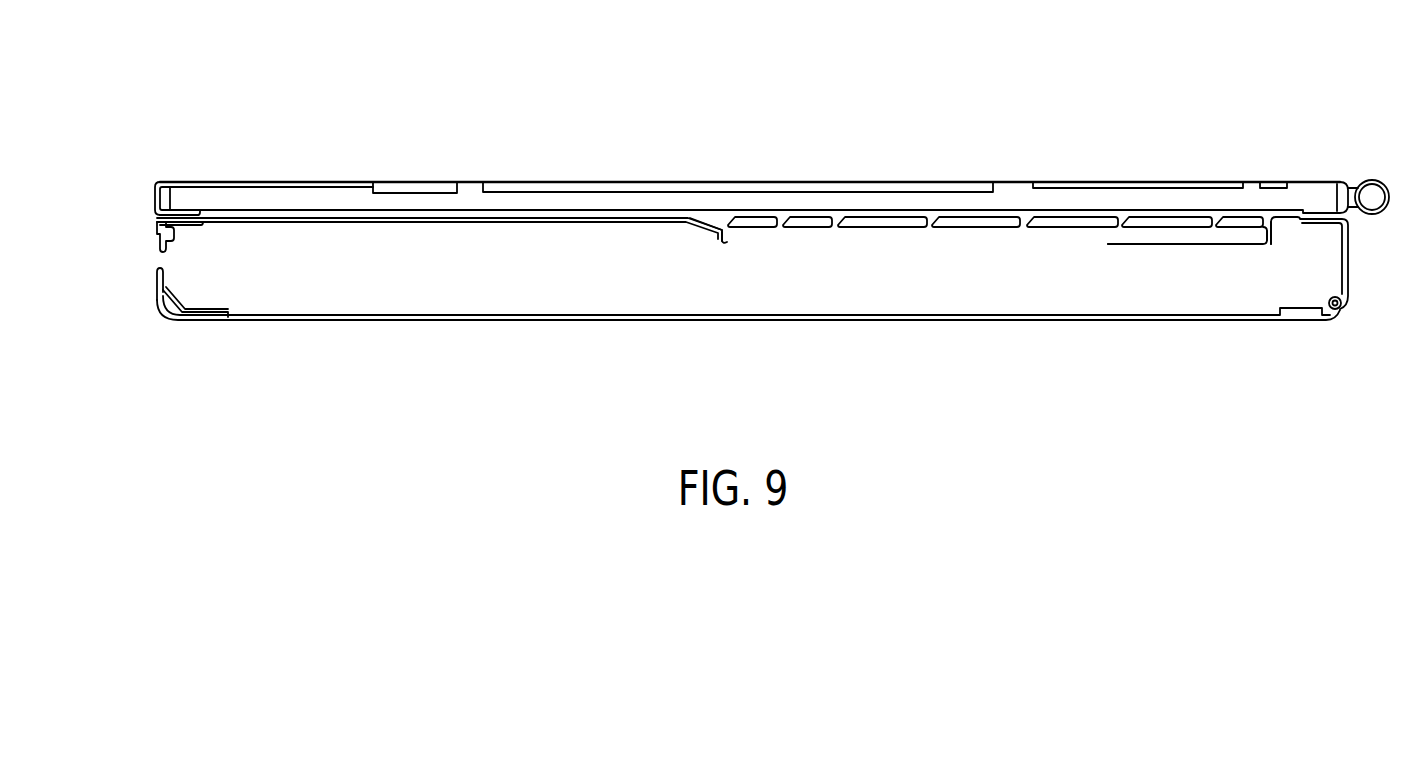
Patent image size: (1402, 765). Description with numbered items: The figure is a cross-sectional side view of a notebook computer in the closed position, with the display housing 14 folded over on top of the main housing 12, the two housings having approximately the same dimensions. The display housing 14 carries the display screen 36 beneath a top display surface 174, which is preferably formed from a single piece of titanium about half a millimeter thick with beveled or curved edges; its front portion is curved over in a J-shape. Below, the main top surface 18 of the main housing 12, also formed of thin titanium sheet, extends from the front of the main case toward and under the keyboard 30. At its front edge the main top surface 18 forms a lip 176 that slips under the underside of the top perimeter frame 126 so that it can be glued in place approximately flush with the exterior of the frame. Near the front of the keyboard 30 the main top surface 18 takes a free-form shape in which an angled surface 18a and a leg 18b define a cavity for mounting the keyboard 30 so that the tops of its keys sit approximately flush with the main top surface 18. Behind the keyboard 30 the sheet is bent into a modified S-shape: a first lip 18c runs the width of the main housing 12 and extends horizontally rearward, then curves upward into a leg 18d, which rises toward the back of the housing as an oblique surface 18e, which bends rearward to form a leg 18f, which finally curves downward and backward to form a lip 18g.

The main housing 12 is at (871, 352).
The display housing 14 is at (453, 150).
The main top surface 18 is at (243, 222).
The angled surface 18a is at (700, 220).
The leg 18b is at (728, 243).
The first lip 18c is at (1125, 245).
The leg 18d is at (1283, 224).
The oblique surface 18e is at (1265, 215).
The leg 18f is at (1290, 218).
The lip 18g is at (1312, 225).
The keyboard 30 is at (993, 218).
The display screen 36 is at (313, 200).
The top perimeter frame 126 is at (157, 288).
The top display surface 174 is at (222, 182).
The lip 176 is at (180, 226).